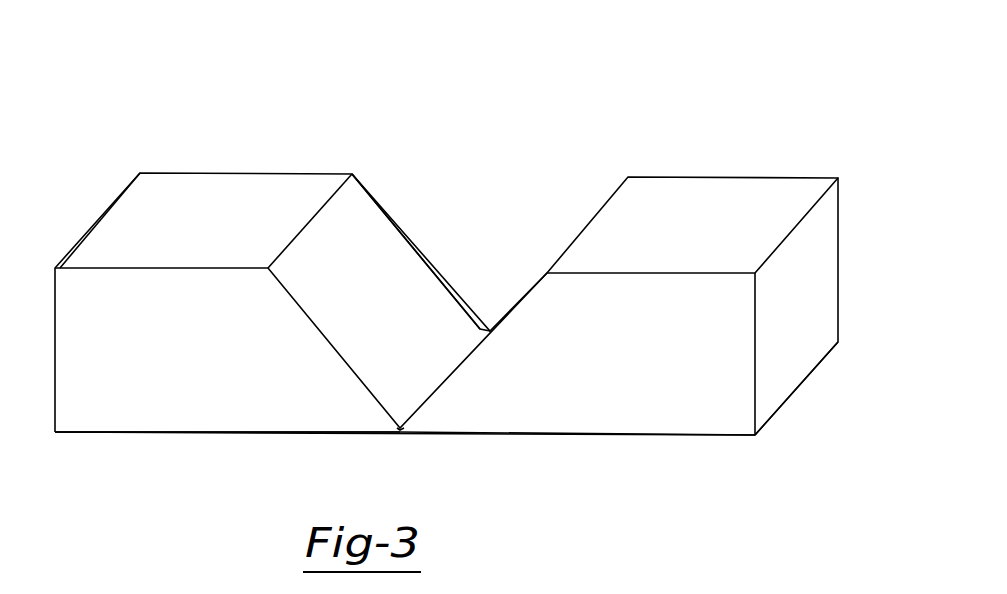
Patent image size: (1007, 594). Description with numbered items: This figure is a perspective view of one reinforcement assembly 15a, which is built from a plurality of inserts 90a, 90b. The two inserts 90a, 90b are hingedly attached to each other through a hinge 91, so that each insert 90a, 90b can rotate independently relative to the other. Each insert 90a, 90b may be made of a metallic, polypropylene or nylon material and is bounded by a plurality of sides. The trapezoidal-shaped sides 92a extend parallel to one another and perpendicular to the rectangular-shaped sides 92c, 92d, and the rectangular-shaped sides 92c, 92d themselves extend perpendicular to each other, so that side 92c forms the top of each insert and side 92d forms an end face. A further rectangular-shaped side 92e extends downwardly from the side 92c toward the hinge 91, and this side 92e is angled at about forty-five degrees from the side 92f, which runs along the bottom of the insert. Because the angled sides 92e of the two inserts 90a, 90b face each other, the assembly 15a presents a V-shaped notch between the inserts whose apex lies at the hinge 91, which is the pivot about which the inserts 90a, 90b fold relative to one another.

The reinforcement assembly 15a is at (714, 70).
The insert 90a is at (254, 136).
The insert 90b is at (782, 144).
The hinge 91 is at (400, 430).
The trapezoidal-shaped side 92a is at (100, 408).
The rectangular-shaped side 92c is at (120, 222).
The rectangular-shaped side 92d is at (777, 357).
The rectangular-shaped side 92e is at (370, 250).
The side 92f is at (218, 432).